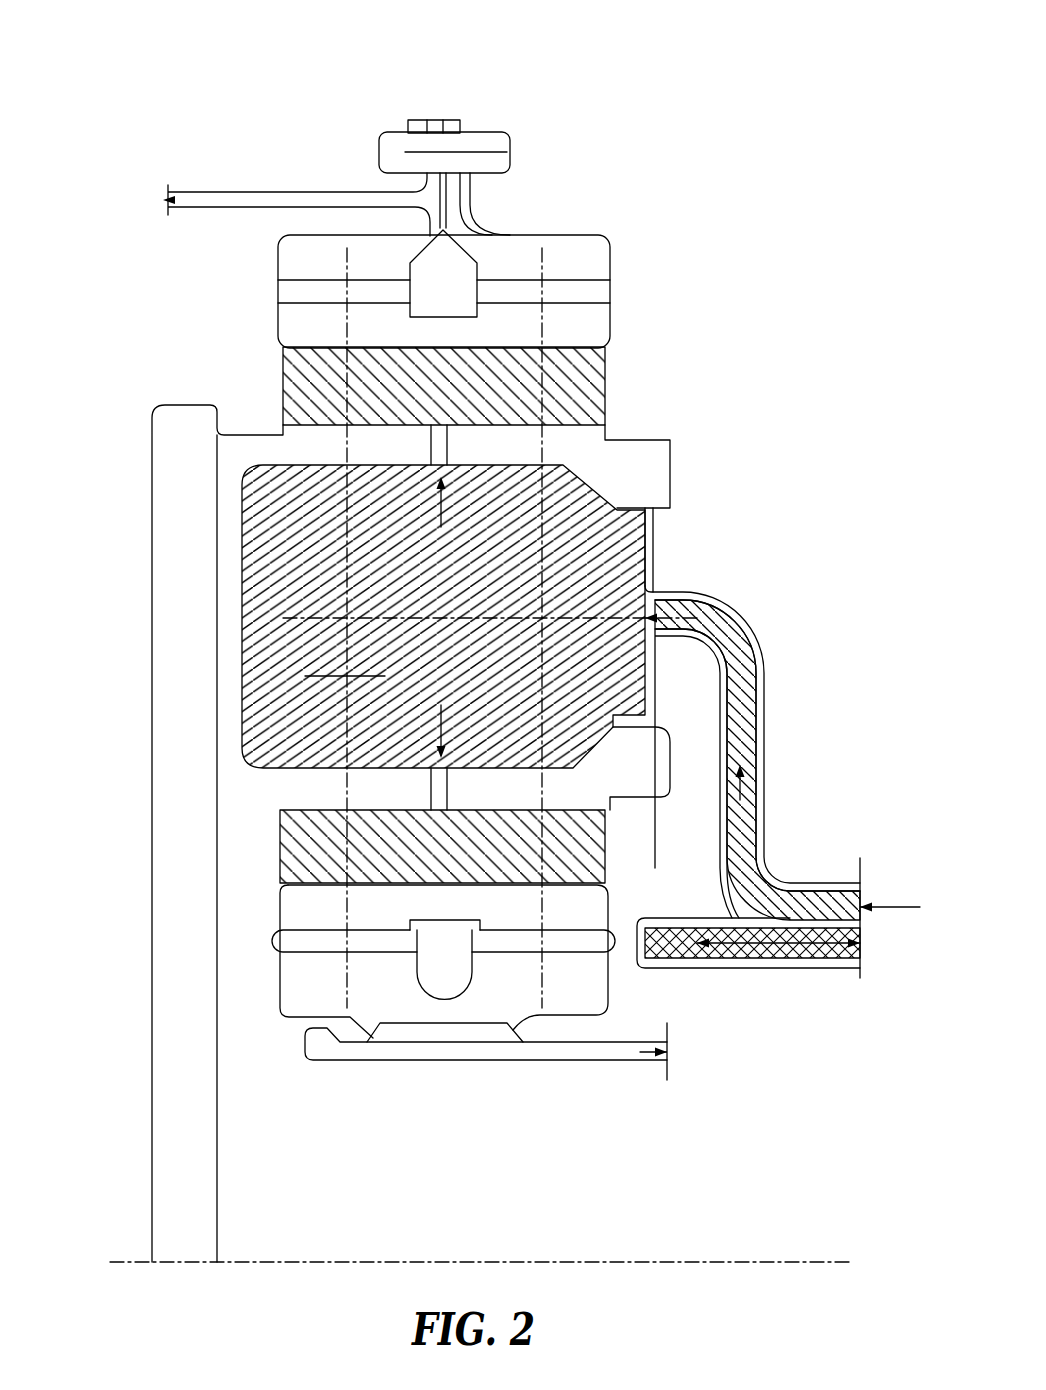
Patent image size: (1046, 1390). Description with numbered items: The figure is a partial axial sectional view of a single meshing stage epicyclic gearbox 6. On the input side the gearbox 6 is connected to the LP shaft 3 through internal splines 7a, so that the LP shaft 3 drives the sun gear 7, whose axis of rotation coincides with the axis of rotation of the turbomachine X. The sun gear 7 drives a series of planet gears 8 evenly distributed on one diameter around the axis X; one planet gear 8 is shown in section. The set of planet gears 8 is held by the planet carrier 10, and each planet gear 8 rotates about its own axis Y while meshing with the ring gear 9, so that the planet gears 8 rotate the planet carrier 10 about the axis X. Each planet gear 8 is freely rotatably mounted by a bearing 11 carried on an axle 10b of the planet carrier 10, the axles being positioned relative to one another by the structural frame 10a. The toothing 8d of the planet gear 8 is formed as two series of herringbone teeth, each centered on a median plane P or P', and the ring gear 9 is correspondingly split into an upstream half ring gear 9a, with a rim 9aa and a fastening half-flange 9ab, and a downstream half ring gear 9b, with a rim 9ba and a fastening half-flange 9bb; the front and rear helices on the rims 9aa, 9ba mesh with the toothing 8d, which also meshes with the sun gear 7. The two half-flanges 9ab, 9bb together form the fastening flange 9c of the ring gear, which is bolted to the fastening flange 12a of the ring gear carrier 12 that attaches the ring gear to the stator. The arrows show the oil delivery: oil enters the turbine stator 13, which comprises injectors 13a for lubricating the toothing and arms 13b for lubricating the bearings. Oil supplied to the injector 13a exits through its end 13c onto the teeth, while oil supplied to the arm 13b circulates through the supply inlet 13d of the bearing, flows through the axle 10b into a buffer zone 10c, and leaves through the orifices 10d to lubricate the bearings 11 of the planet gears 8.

The LP shaft 3 is at (617, 1053).
The epicyclic gearbox 6 is at (803, 352).
The sun gear 7 is at (285, 970).
The internal splines 7a is at (408, 1032).
The planet gear 8 is at (290, 920).
The toothing 8d is at (290, 940).
The ring gear 9 is at (603, 240).
The upstream half ring gear 9a is at (302, 255).
The downstream half ring gear 9b is at (580, 267).
The rim 9aa is at (313, 247).
The rim 9ba is at (527, 250).
The fastening half-flange 9ab is at (432, 120).
The fastening half-flange 9bb is at (452, 120).
The fastening flange of the ring gear 9c is at (527, 40).
The planet carrier 10 is at (650, 448).
The structural frame 10a is at (160, 552).
The axle 10b is at (650, 770).
The buffer zone 10c is at (349, 659).
The orifice 10d is at (452, 442).
The bearing 11 is at (605, 384).
The ring gear carrier 12 is at (222, 190).
The fastening flange of the ring gear carrier 12a is at (405, 120).
The turbine stator 13 is at (853, 833).
The injector 13a is at (780, 972).
The arm 13b is at (755, 700).
The end 13c is at (685, 1052).
The supply inlet of the bearing 13d is at (653, 520).
The median plane P is at (221, 1034).
The median plane P' is at (512, 1067).
The axis of rotation of the turbomachine X is at (775, 1258).
The axis of the planet gear Y is at (658, 586).